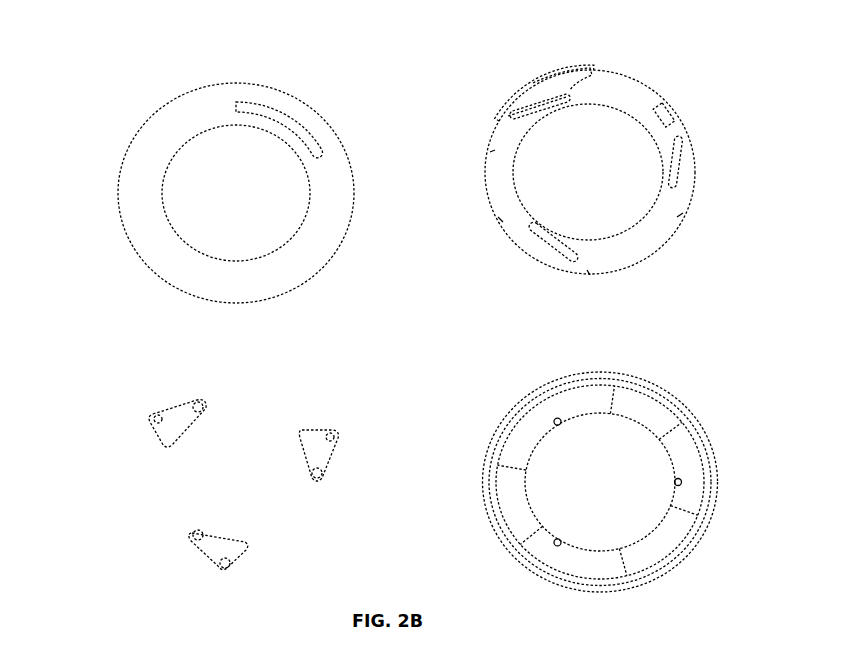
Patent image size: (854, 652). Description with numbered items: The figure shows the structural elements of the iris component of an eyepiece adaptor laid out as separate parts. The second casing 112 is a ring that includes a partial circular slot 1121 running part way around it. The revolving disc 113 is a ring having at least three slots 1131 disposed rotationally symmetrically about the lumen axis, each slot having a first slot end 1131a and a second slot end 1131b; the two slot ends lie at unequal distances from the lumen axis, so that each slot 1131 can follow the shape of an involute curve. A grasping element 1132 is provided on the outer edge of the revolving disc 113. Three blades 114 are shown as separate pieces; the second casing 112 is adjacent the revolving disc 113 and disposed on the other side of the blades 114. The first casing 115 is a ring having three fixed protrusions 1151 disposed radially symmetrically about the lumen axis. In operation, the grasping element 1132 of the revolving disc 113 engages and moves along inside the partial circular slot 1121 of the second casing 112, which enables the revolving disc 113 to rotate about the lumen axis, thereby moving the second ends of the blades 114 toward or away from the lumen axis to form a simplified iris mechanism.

The second casing 112 is at (94, 153).
The partial circular slot 1121 is at (267, 105).
The revolving disc 113 is at (772, 112).
The slots 1131 is at (535, 102).
The first slot end 1131a is at (512, 112).
The second slot end 1131b is at (572, 94).
The grasping element 1132 is at (670, 105).
The blades 114 is at (150, 420).
The first casing 115 is at (745, 543).
The fixed protrusions 1151 is at (556, 416).